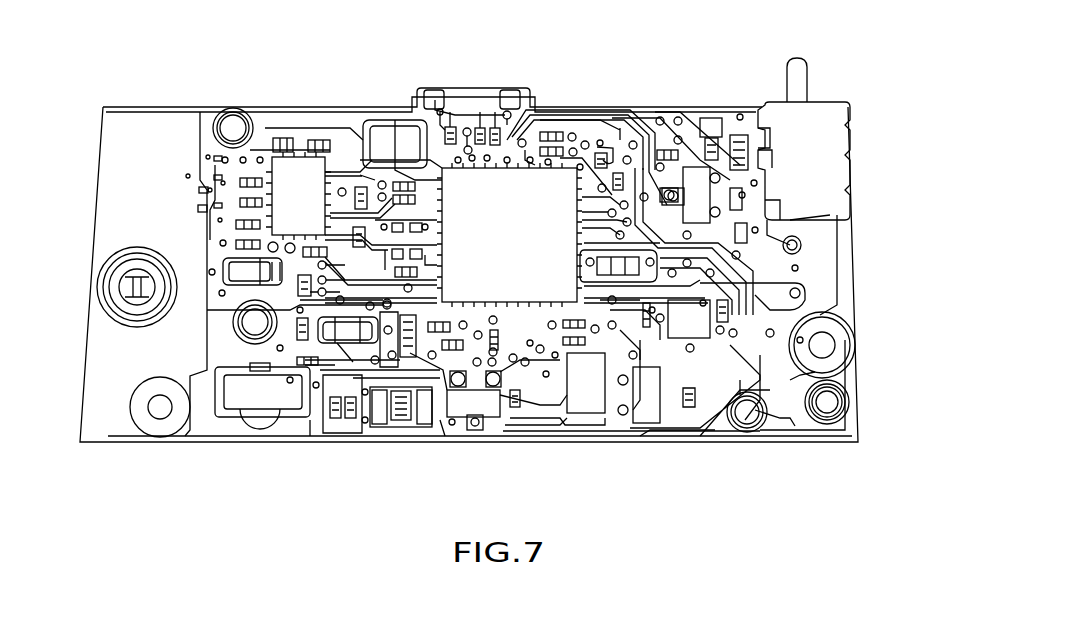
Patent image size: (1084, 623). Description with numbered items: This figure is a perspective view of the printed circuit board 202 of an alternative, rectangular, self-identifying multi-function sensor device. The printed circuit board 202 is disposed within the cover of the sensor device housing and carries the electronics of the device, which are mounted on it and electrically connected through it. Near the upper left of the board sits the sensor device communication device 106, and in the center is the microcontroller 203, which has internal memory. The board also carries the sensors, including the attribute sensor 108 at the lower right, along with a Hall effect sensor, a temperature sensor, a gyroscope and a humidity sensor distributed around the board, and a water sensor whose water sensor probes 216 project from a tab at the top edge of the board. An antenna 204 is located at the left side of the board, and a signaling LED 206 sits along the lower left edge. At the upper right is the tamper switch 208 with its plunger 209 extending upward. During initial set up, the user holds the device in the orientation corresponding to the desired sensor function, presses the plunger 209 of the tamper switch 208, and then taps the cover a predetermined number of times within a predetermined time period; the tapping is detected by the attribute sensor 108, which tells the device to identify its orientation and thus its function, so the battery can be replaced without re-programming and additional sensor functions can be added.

The printed circuit board 202 is at (477, 62).
The water sensor probes 216 is at (448, 96).
The sensor device communication device 106 is at (290, 165).
The microcontroller 203 is at (563, 186).
The plunger 209 is at (800, 77).
The tamper switch 208 is at (840, 155).
The antenna 204 is at (137, 305).
The signaling LED 206 is at (262, 410).
The attribute sensor 108 is at (700, 335).